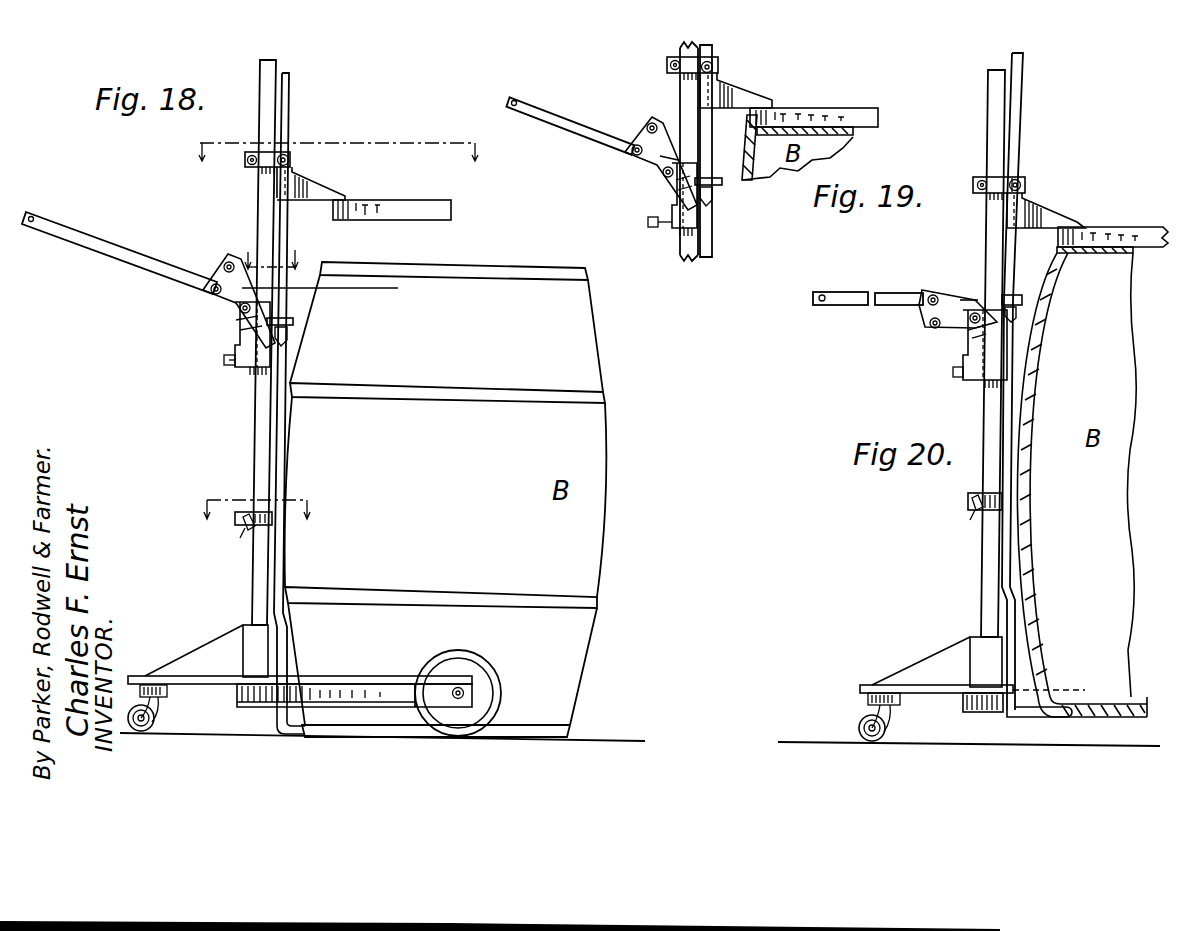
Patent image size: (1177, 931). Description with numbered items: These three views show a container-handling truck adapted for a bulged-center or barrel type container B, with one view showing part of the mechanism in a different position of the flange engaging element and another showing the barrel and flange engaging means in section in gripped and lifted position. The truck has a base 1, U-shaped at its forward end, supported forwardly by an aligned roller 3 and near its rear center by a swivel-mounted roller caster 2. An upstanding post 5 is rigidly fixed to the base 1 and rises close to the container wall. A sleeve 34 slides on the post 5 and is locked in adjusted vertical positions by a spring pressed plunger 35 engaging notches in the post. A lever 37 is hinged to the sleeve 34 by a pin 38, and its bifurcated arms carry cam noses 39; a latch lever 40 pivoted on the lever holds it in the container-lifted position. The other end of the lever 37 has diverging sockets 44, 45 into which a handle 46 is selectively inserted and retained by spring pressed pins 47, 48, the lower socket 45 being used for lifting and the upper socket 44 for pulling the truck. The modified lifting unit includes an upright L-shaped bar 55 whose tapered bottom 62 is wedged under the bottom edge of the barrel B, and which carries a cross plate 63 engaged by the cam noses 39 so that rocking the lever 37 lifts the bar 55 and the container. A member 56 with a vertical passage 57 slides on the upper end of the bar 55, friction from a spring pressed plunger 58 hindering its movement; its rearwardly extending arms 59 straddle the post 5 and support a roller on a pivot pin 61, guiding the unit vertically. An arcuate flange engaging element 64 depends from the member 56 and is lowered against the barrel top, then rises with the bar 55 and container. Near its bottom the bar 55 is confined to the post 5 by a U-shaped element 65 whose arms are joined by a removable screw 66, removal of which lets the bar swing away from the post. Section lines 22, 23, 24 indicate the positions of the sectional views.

In FIG. 18, the base 1 is at (225, 690).
In FIG. 20, the base 1 is at (950, 694).
In FIG. 18, the roller caster 2 is at (150, 733).
In FIG. 20, the roller caster 2 is at (862, 726).
In FIG. 18, the roller 3 is at (502, 700).
In FIG. 18, the post 5 is at (255, 438).
In FIG. 19, the post 5 is at (700, 258).
In FIG. 20, the post 5 is at (990, 233).
In FIG. 18, the section line 22 is at (254, 524).
In FIG. 18, the section line 23 is at (276, 246).
In FIG. 18, the section line 24 is at (341, 169).
In FIG. 18, the sleeve 34 is at (272, 358).
In FIG. 19, the sleeve 34 is at (695, 218).
In FIG. 20, the sleeve 34 is at (1000, 352).
In FIG. 18, the spring pressed plunger 35 is at (228, 368).
In FIG. 19, the spring pressed plunger 35 is at (651, 232).
In FIG. 20, the spring pressed plunger 35 is at (953, 378).
In FIG. 18, the lever 37 is at (335, 289).
In FIG. 19, the lever 37 is at (655, 163).
In FIG. 20, the lever 37 is at (962, 300).
In FIG. 18, the pin 38 is at (255, 340).
In FIG. 19, the pin 38 is at (660, 188).
In FIG. 20, the pin 38 is at (975, 332).
In FIG. 18, the cam noses 39 is at (289, 337).
In FIG. 19, the cam noses 39 is at (720, 192).
In FIG. 20, the cam noses 39 is at (1020, 314).
In FIG. 18, the latch lever 40 is at (237, 322).
In FIG. 19, the latch lever 40 is at (652, 182).
In FIG. 20, the latch lever 40 is at (963, 330).
In FIG. 18, the socket 44 is at (222, 276).
In FIG. 19, the socket 44 is at (640, 140).
In FIG. 20, the socket 44 is at (926, 292).
In FIG. 18, the socket 45 is at (212, 293).
In FIG. 19, the socket 45 is at (630, 152).
In FIG. 20, the socket 45 is at (940, 330).
In FIG. 18, the handle 46 is at (117, 243).
In FIG. 19, the handle 46 is at (559, 116).
In FIG. 20, the handle 46 is at (845, 307).
In FIG. 18, the spring pressed pin 47 is at (235, 260).
In FIG. 19, the spring pressed pin 47 is at (660, 122).
In FIG. 20, the spring pressed pin 47 is at (928, 307).
In FIG. 18, the spring pressed pin 48 is at (240, 300).
In FIG. 19, the spring pressed pin 48 is at (634, 162).
In FIG. 20, the spring pressed pin 48 is at (932, 328).
In FIG. 18, the L-shaped bar 55 is at (285, 445).
In FIG. 19, the L-shaped bar 55 is at (710, 242).
In FIG. 20, the L-shaped bar 55 is at (1023, 85).
In FIG. 18, the member 56 is at (300, 190).
In FIG. 19, the member 56 is at (740, 92).
In FIG. 20, the member 56 is at (1040, 207).
In FIG. 20, the vertical passage 57 is at (1022, 177).
In FIG. 18, the spring pressed plunger 58 is at (290, 157).
In FIG. 19, the spring pressed plunger 58 is at (714, 60).
In FIG. 20, the spring pressed plunger 58 is at (1025, 183).
In FIG. 18, the arms 59 is at (268, 157).
In FIG. 19, the arms 59 is at (684, 55).
In FIG. 20, the arms 59 is at (992, 177).
In FIG. 18, the pivot pin 61 is at (258, 168).
In FIG. 19, the pivot pin 61 is at (668, 66).
In FIG. 20, the pivot pin 61 is at (974, 187).
In FIG. 18, the bottom of the L 62 is at (290, 738).
In FIG. 20, the bottom of the L 62 is at (1058, 720).
In FIG. 18, the cross plate 63 is at (293, 322).
In FIG. 19, the cross plate 63 is at (722, 182).
In FIG. 20, the cross plate 63 is at (1025, 300).
In FIG. 18, the flange engaging element 64 is at (416, 208).
In FIG. 19, the flange engaging element 64 is at (867, 108).
In FIG. 20, the flange engaging element 64 is at (1141, 227).
In FIG. 18, the U-shaped element 65 is at (255, 530).
In FIG. 20, the U-shaped element 65 is at (970, 498).
In FIG. 18, the screw 66 is at (243, 530).
In FIG. 20, the screw 66 is at (968, 512).